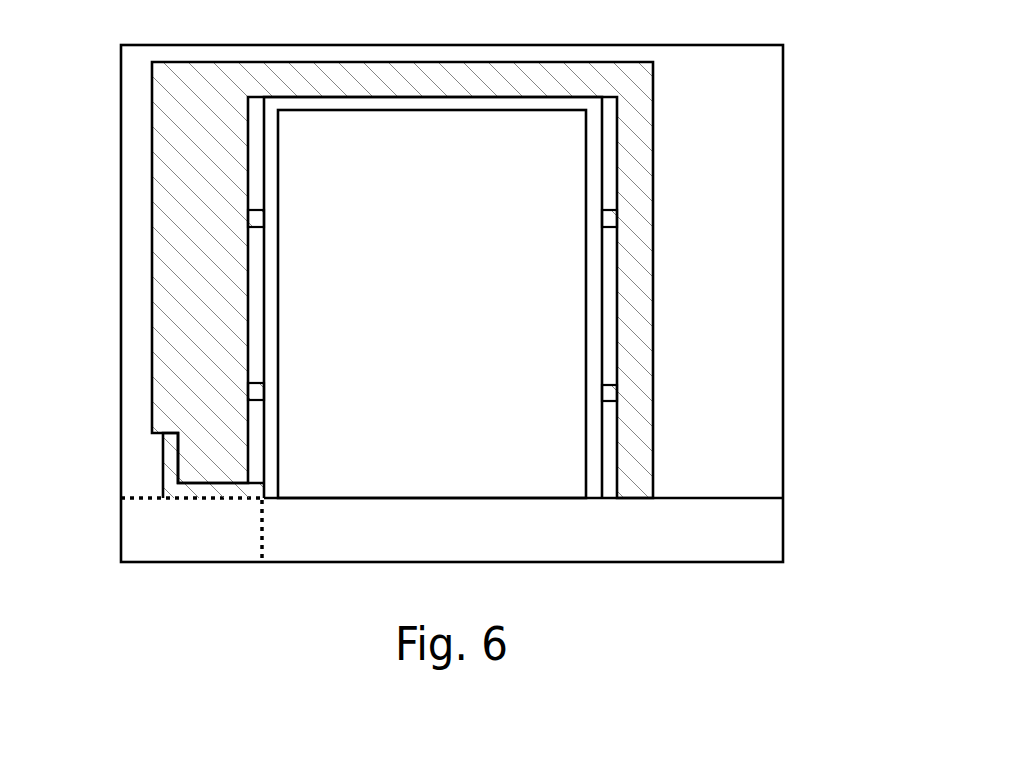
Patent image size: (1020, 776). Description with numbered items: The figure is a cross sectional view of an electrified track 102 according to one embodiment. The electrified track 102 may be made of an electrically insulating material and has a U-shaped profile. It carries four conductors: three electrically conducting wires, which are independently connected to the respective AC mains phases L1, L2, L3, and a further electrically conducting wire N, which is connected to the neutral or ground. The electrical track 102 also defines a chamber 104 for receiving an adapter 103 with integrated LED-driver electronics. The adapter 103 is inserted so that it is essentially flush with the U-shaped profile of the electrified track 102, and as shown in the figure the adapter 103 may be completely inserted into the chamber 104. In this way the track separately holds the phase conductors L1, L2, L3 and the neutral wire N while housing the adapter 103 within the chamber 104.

The electrified track 102 is at (632, 298).
The adapter 103 is at (592, 438).
The chamber 104 is at (432, 304).
The AC main phase L1 is at (253, 220).
The AC main phase L2 is at (610, 218).
The AC main phase L3 is at (253, 397).
The neutral wire N is at (612, 392).